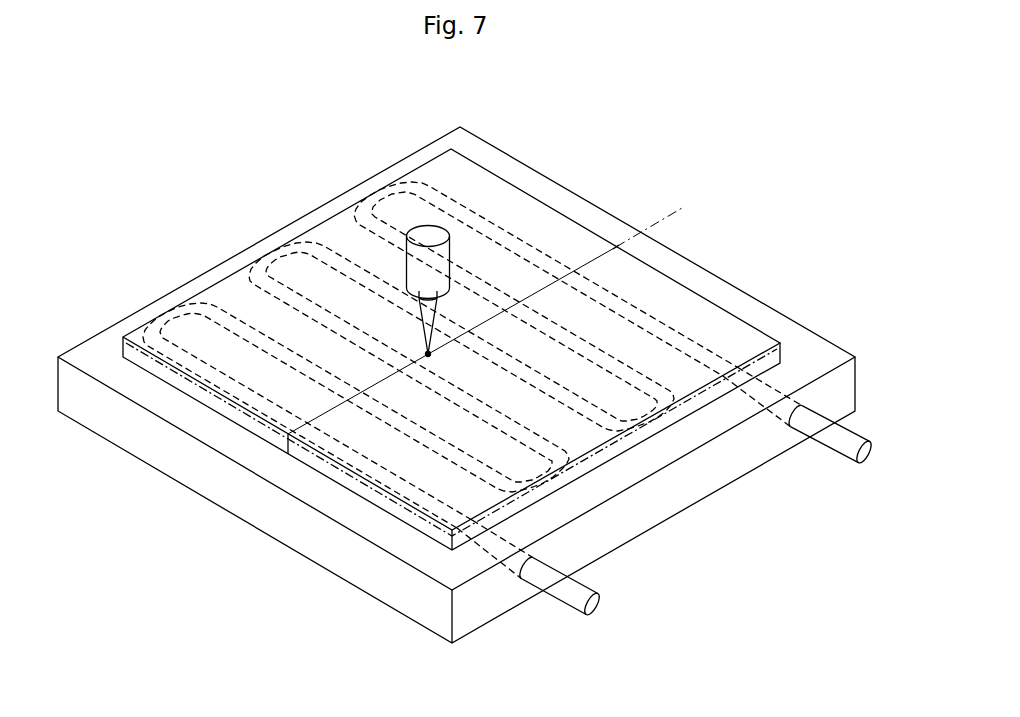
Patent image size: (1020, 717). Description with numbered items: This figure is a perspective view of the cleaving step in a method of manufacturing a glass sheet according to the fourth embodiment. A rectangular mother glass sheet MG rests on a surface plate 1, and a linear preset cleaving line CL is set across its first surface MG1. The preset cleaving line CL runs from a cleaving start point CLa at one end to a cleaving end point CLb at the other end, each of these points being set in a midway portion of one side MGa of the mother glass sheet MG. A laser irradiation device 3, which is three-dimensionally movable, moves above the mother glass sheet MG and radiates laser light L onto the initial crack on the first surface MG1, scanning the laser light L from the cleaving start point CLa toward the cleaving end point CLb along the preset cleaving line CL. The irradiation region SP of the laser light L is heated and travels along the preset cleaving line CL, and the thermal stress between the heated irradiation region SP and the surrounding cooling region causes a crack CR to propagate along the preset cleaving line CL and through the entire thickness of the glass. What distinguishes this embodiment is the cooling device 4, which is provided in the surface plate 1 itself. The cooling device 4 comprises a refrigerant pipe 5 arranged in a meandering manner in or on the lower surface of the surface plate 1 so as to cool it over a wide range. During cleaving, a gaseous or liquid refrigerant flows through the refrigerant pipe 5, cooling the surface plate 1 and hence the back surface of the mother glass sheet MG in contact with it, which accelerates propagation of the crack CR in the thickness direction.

The surface plate 1 is at (692, 478).
The laser irradiation device 3 is at (428, 233).
The cooling device 4 is at (835, 441).
The refrigerant pipe 5 is at (565, 596).
The mother glass sheet MG is at (680, 280).
The first surface MG1 is at (340, 240).
The side of the mother glass sheet MGa is at (495, 172).
The preset cleaving line CL is at (537, 290).
The cleaving start point CLa is at (305, 445).
The cleaving end point CLb is at (616, 246).
The crack CR is at (368, 385).
The laser light L is at (437, 326).
The irradiation region SP is at (431, 354).